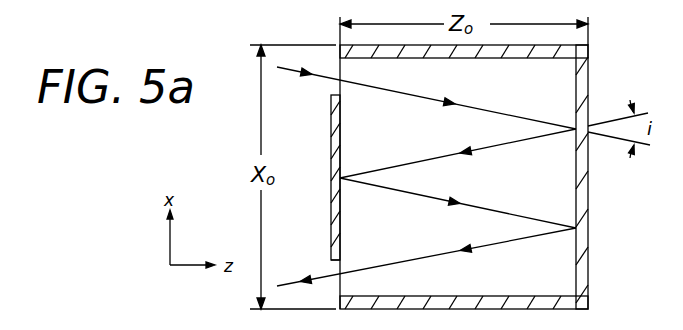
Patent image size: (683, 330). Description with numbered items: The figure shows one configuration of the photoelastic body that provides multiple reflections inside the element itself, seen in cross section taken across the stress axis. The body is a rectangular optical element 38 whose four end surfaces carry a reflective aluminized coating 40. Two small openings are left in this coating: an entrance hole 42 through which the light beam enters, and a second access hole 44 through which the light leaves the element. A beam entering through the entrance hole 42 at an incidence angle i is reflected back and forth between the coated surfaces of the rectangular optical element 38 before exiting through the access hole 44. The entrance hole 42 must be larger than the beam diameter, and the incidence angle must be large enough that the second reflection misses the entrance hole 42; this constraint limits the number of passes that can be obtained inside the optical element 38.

The rectangular optical element 38 is at (557, 262).
The reflective aluminized coating 40 is at (586, 80).
The entrance hole 42 is at (333, 86).
The access hole 44 is at (334, 263).